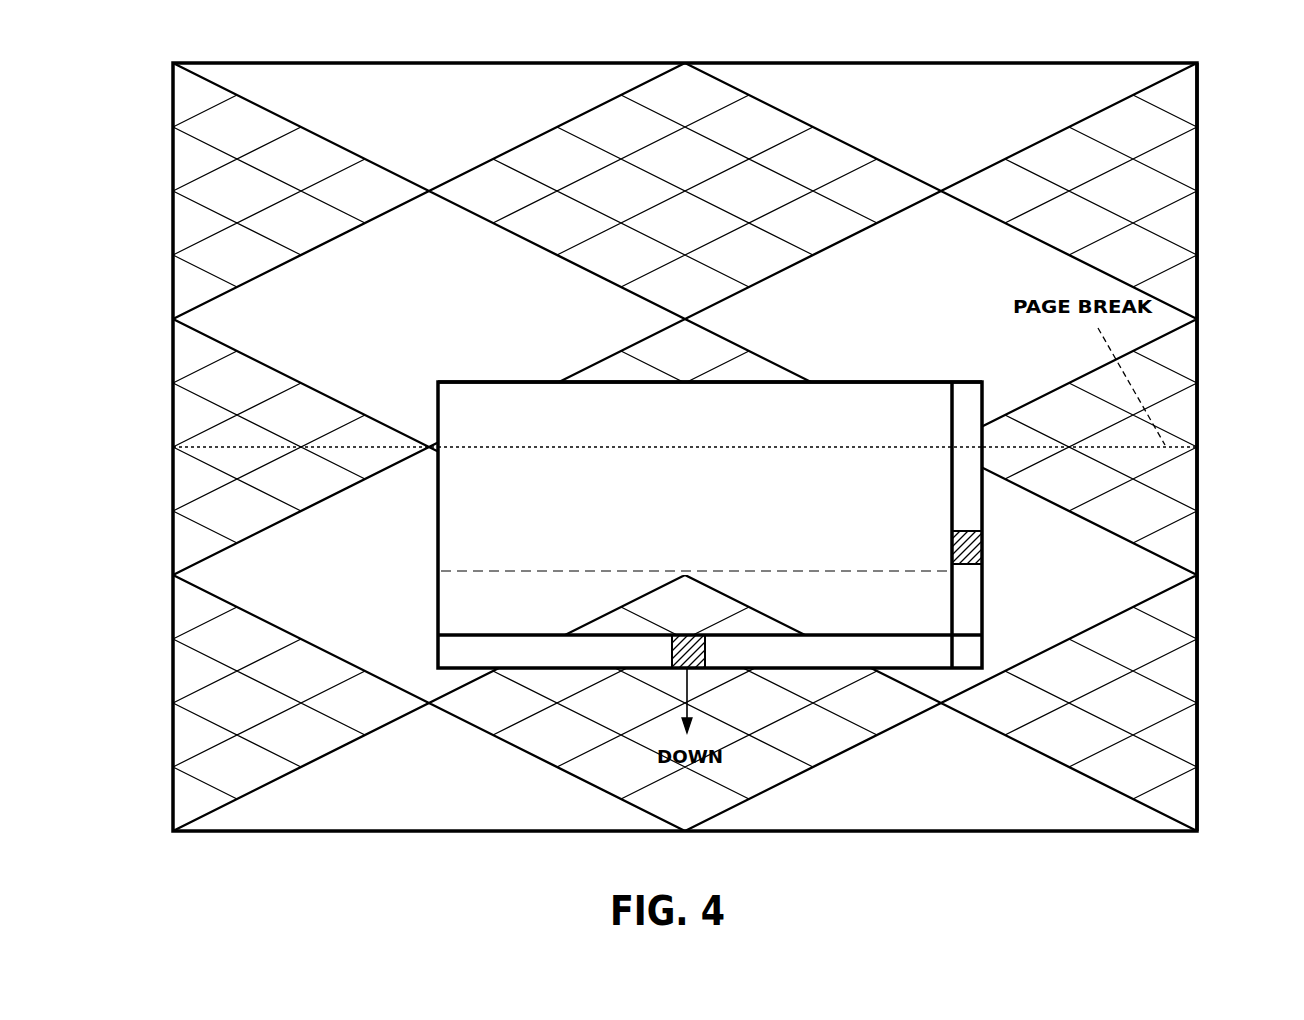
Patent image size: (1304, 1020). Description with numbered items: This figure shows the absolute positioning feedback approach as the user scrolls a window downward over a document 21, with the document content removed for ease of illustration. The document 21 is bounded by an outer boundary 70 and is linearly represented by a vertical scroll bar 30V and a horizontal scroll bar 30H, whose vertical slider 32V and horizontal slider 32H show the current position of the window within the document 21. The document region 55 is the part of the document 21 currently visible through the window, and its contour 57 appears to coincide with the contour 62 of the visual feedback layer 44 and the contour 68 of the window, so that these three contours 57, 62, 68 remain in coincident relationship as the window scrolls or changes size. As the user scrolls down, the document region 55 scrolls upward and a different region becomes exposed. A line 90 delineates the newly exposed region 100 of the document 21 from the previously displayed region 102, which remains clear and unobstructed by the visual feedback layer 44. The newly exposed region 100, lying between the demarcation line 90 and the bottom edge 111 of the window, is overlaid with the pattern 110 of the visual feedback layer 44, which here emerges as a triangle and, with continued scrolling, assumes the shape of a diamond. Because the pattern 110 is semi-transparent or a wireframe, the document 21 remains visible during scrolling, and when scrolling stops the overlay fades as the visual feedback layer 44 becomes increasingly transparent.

The document 21 is at (1224, 71).
The visual feedback layer 44 is at (1196, 167).
The outer boundary 70 is at (1196, 287).
The document region 55 is at (722, 504).
The contour 57 is at (740, 361).
The contour 62 is at (740, 361).
The contour 68 is at (898, 381).
The vertical scroll bar 30V is at (970, 408).
The vertical slider 32V is at (982, 555).
The horizontal scroll bar 30H is at (755, 660).
The horizontal slider 32H is at (672, 655).
The line 90 is at (457, 571).
The newly exposed region 100 is at (467, 623).
The previously displayed region 102 is at (482, 517).
The pattern 110 is at (792, 620).
The bottom edge 111 is at (510, 636).